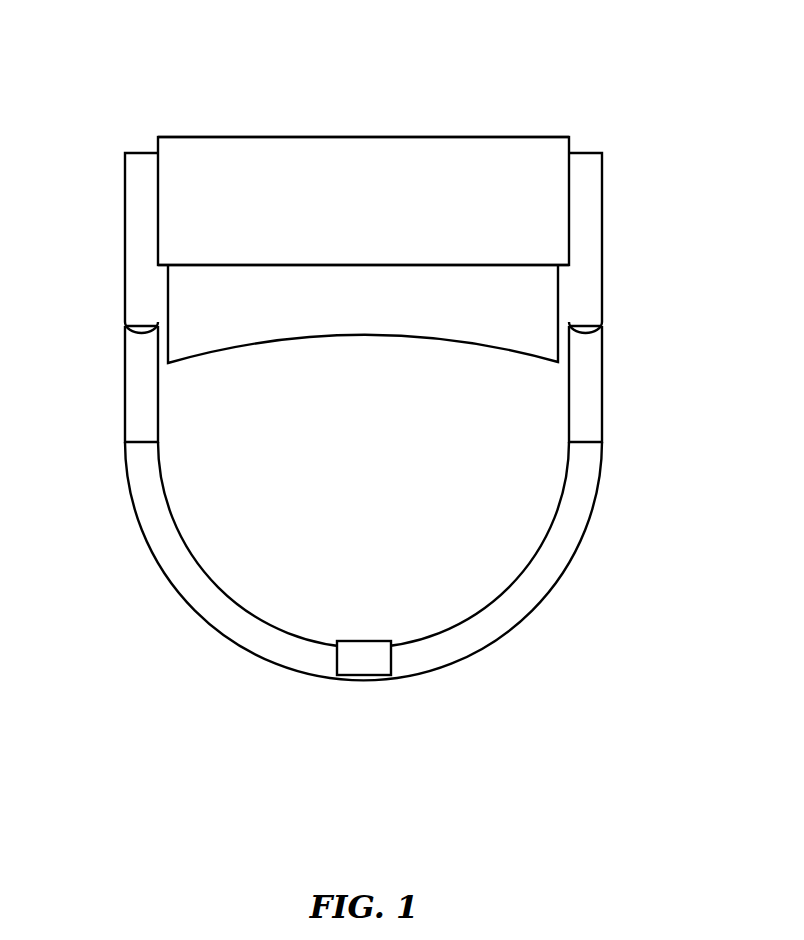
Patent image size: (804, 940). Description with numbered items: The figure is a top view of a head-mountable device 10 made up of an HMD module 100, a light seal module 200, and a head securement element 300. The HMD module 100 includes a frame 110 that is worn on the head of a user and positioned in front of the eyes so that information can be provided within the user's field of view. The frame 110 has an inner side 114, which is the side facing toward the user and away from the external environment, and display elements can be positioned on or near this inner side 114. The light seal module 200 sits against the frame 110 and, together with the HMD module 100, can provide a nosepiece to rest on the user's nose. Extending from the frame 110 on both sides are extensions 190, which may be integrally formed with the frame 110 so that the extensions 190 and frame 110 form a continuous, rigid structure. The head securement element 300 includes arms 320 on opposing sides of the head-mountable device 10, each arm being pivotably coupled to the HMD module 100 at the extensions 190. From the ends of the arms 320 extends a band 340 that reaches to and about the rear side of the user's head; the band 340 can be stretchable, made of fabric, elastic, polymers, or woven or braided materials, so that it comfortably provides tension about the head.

The head-mountable device 10 is at (148, 80).
The HMD module 100 is at (157, 147).
The frame 110 is at (166, 173).
The inner side 114 is at (568, 267).
The extensions 190 is at (139, 218).
The light seal module 200 is at (183, 275).
The head securement element 300 is at (128, 477).
The arms 320 is at (139, 385).
The band 340 is at (488, 613).